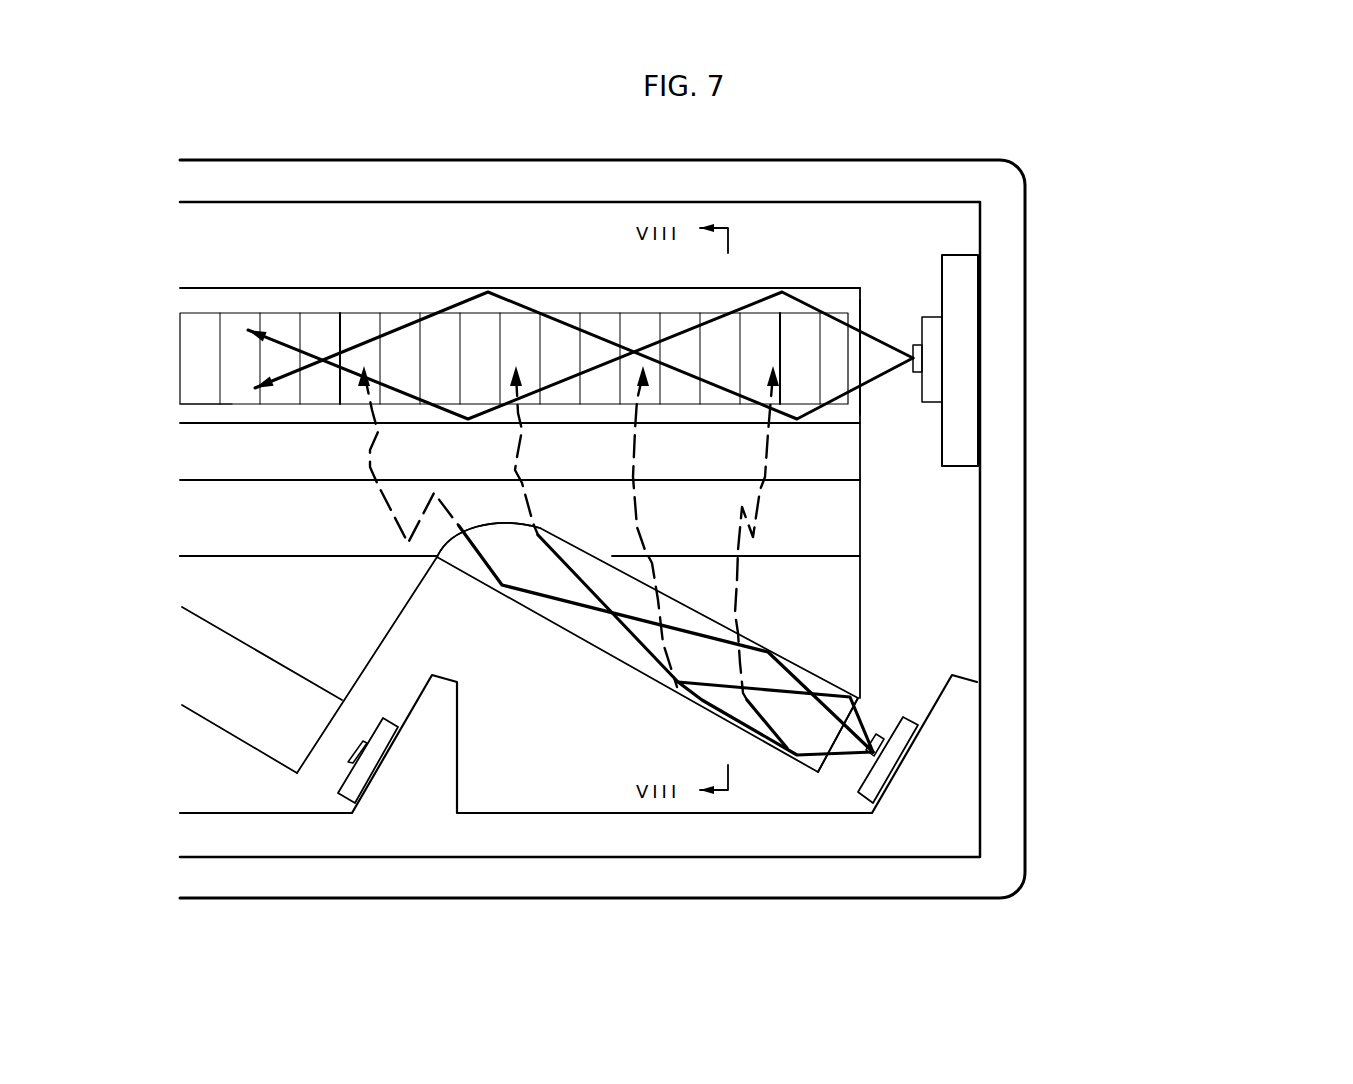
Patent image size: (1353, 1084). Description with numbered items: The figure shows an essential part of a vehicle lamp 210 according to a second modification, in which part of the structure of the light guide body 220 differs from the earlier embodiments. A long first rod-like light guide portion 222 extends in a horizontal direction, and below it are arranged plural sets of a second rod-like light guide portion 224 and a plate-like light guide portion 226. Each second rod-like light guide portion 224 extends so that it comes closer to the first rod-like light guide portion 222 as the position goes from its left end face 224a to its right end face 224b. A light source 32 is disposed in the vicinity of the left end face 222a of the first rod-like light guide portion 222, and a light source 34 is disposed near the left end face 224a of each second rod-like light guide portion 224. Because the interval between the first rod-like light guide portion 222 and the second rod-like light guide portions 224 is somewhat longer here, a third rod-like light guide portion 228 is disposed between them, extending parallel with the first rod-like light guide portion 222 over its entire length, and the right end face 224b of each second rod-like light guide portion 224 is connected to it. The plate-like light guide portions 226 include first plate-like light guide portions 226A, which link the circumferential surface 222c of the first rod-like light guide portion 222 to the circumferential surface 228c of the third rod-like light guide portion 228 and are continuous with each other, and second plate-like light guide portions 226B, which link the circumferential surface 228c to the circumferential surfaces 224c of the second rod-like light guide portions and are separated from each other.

The vehicle lamp 210 is at (1128, 202).
The light guide body 220 is at (273, 282).
The first rod-like light guide portion 222 is at (575, 298).
The left end face of the first rod-like light guide portion 222a is at (860, 352).
The circumferential surface of the first rod-like light guide portion 222c is at (233, 415).
The second rod-like light guide portion 224 is at (628, 650).
The left end face of the second rod-like light guide portion 224a is at (838, 732).
The right end face of the second rod-like light guide portion 224b is at (492, 523).
The circumferential surface of the second rod-like light guide portion 224c is at (240, 703).
The plate-like light guide portion 226 is at (1152, 425).
The first plate-like light guide portion 226A is at (798, 452).
The second plate-like light guide portion 226B is at (798, 606).
The third rod-like light guide portion 228 is at (815, 512).
The circumferential surface of the third rod-like light guide portion 228c is at (255, 533).
The light source 32 is at (913, 332).
The light source 34 is at (887, 722).